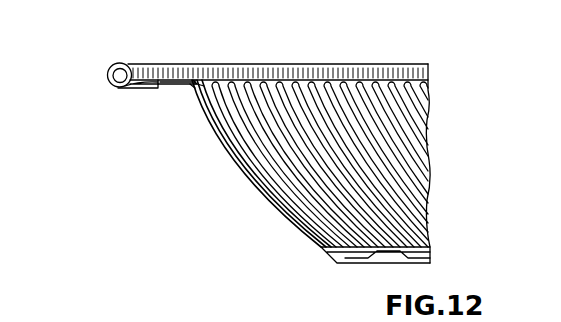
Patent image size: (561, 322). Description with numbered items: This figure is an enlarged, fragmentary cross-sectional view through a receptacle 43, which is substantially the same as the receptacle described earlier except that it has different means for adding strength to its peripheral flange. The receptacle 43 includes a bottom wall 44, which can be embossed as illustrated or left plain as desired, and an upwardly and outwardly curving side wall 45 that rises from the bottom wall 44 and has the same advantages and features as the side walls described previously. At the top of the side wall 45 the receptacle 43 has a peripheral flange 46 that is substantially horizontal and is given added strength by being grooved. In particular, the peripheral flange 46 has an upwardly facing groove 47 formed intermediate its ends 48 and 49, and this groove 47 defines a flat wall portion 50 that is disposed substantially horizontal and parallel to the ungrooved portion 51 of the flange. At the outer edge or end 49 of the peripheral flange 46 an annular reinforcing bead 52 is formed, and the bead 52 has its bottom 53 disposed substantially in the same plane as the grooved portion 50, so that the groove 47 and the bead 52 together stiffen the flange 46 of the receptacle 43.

The receptacle 43 is at (454, 37).
The bottom wall 44 is at (356, 264).
The side wall 45 is at (246, 189).
The peripheral flange 46 is at (178, 103).
The groove 47 is at (142, 81).
The end 48 is at (194, 80).
The end 49 is at (125, 90).
The flat wall portion 50 is at (148, 88).
The ungrooved portion 51 is at (181, 80).
The annular reinforcing bead 52 is at (108, 69).
The bottom 53 is at (113, 87).